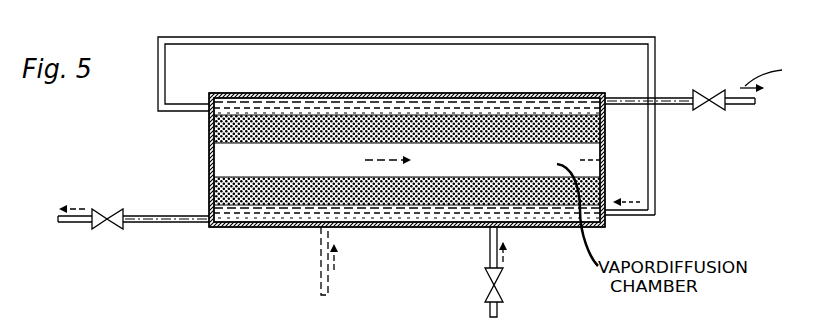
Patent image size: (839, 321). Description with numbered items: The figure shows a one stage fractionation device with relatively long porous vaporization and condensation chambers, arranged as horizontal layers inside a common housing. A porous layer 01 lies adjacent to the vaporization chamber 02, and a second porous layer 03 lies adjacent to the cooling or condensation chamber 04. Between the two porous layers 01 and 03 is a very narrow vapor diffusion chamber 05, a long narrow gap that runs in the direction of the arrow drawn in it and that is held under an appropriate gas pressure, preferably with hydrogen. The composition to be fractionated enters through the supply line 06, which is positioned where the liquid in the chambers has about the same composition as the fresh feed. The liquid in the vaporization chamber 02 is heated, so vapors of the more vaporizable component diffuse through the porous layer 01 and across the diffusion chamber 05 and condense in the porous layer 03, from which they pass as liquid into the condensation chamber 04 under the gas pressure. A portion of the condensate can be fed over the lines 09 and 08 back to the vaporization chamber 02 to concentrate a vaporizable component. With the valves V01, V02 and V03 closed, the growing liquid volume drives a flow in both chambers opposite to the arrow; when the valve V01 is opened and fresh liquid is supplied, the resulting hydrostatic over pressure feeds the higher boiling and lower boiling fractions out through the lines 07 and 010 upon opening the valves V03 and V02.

The porous layer 01 is at (608, 187).
The vaporization chamber 02 is at (300, 223).
The porous layer 03 is at (214, 128).
The condensation chamber 04 is at (290, 105).
The vapor diffusion chamber 05 is at (226, 159).
The supply line 06 is at (322, 264).
The line 07 is at (173, 215).
The line 08 is at (632, 214).
The line 09 is at (183, 102).
The line 010 is at (630, 96).
The valve V01 is at (498, 285).
The valve V02 is at (102, 229).
The valve V03 is at (702, 112).